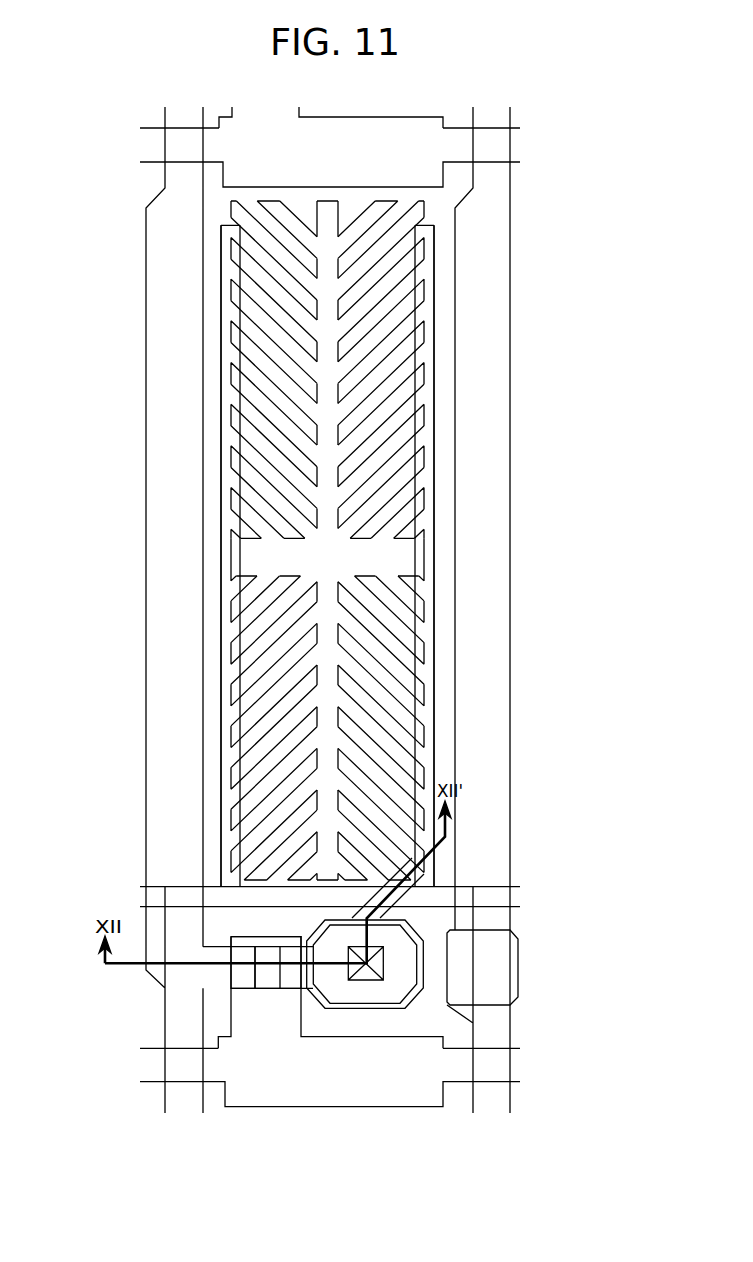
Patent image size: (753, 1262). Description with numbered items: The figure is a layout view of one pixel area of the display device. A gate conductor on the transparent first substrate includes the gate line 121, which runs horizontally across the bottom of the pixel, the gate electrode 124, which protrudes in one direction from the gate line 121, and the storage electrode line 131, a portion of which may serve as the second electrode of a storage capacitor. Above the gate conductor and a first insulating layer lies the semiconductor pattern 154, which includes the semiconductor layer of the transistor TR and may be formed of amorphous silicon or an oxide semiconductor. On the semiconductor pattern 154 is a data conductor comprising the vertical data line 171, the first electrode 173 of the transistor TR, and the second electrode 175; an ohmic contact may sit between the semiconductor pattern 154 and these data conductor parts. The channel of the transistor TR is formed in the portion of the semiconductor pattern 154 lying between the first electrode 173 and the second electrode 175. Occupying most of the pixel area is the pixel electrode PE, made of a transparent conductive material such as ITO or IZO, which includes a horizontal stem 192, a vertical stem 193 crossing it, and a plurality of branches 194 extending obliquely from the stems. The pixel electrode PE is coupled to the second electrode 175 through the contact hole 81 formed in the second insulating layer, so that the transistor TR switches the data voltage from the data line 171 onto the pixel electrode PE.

The data line 171 is at (146, 477).
The gate line 121 is at (150, 1082).
The storage electrode line 131 is at (488, 887).
The gate electrode 124 is at (231, 975).
The first electrode 173 is at (243, 990).
The semiconductor pattern 154 is at (267, 990).
The second electrode 175 is at (382, 1008).
The contact hole 81 is at (383, 963).
The horizontal stem 192 is at (405, 556).
The vertical stem 193 is at (330, 211).
The branch 194 is at (387, 284).
The transistor TR is at (226, 993).
The pixel electrode PE is at (644, 462).